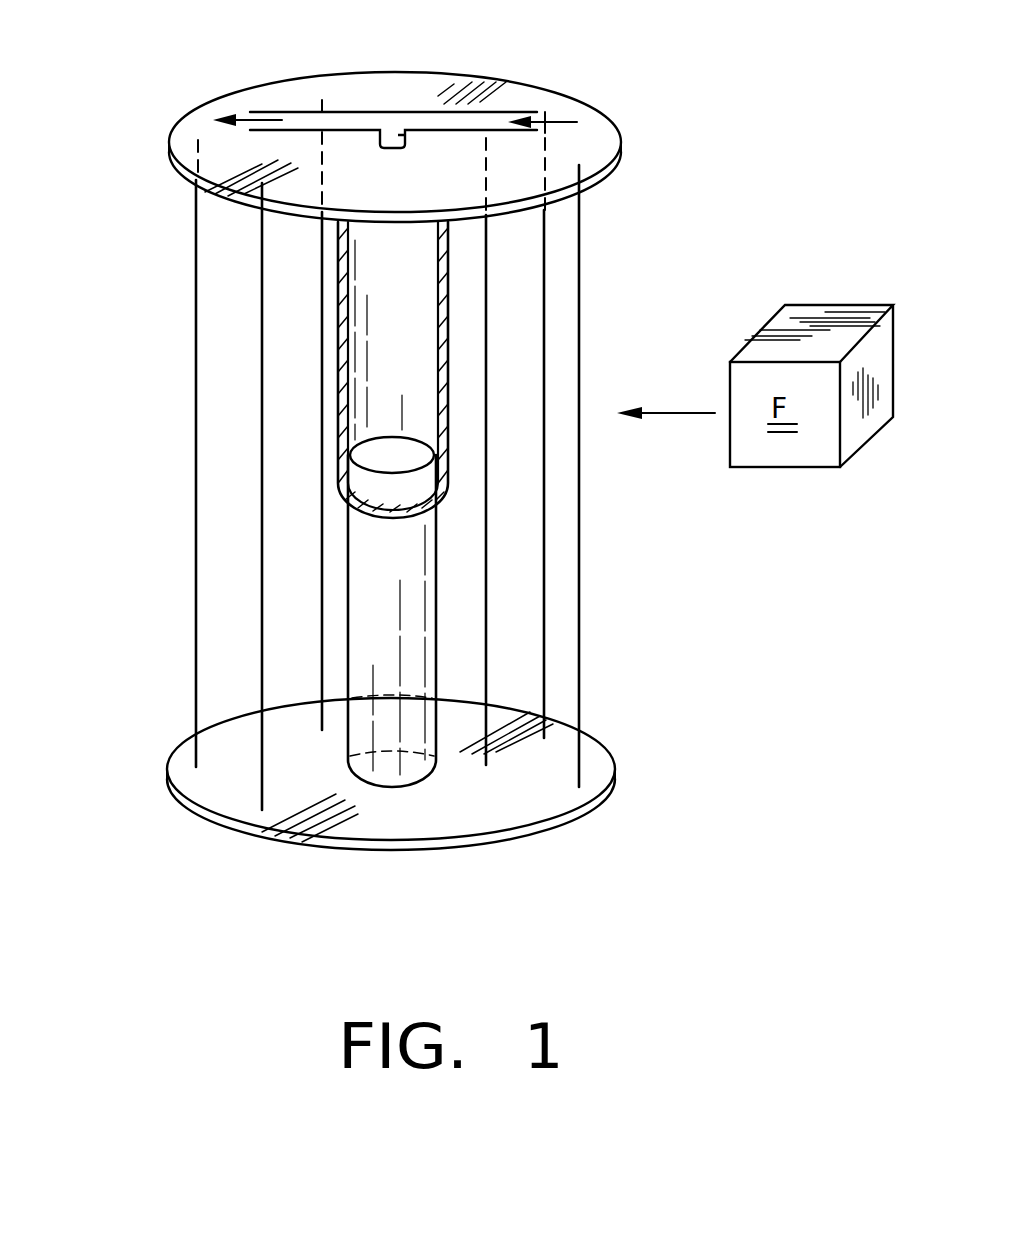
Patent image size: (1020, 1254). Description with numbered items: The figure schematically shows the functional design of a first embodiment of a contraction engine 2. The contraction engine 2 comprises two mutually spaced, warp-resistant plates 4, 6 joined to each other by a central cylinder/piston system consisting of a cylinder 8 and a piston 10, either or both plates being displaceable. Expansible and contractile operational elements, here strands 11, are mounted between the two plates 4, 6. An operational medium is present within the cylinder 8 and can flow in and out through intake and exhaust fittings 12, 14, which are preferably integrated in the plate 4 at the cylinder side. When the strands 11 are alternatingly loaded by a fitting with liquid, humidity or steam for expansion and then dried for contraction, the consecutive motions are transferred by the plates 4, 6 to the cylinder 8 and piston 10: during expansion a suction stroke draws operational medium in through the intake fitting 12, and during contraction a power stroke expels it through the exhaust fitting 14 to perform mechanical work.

The contraction engine 2 is at (114, 326).
The warp-resistant plate 4 is at (360, 90).
The warp-resistant plate 6 is at (235, 797).
The cylinder 8 is at (448, 333).
The piston 10 is at (422, 632).
The strands 11 is at (196, 436).
The intake fitting 12 is at (483, 112).
The exhaust fitting 14 is at (290, 108).